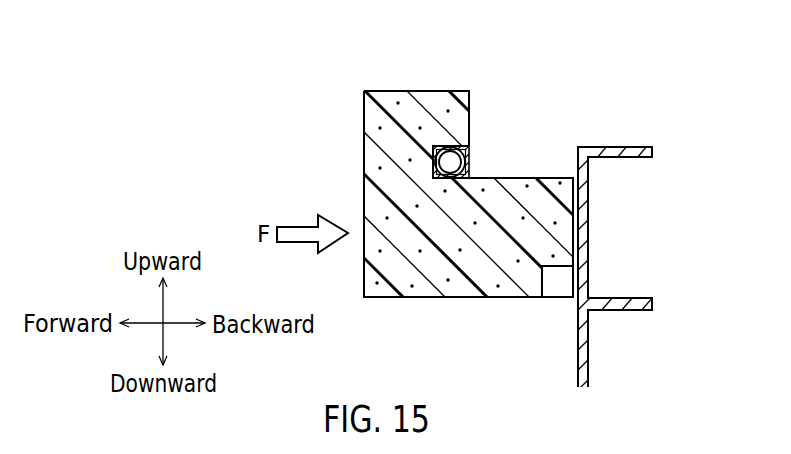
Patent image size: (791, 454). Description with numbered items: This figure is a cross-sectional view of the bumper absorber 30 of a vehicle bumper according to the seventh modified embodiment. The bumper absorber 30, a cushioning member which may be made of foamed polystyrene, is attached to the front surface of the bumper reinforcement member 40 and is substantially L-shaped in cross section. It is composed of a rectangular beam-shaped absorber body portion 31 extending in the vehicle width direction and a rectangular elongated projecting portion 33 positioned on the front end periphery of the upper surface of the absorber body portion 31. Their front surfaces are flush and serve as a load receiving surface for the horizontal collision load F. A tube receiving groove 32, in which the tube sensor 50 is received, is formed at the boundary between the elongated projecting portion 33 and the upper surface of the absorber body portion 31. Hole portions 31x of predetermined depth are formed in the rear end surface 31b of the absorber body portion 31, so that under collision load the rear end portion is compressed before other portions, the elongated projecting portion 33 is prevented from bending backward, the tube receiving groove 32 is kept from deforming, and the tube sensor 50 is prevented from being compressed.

The bumper absorber 30 is at (472, 227).
The absorber body portion 31 is at (512, 266).
The rear end surface 31b is at (574, 226).
The hole portions 31x is at (557, 266).
The tube receiving groove 32 is at (470, 160).
The elongated projecting portion 33 is at (382, 96).
The bumper reinforcement member 40 is at (637, 133).
The tube sensor 50 is at (467, 166).